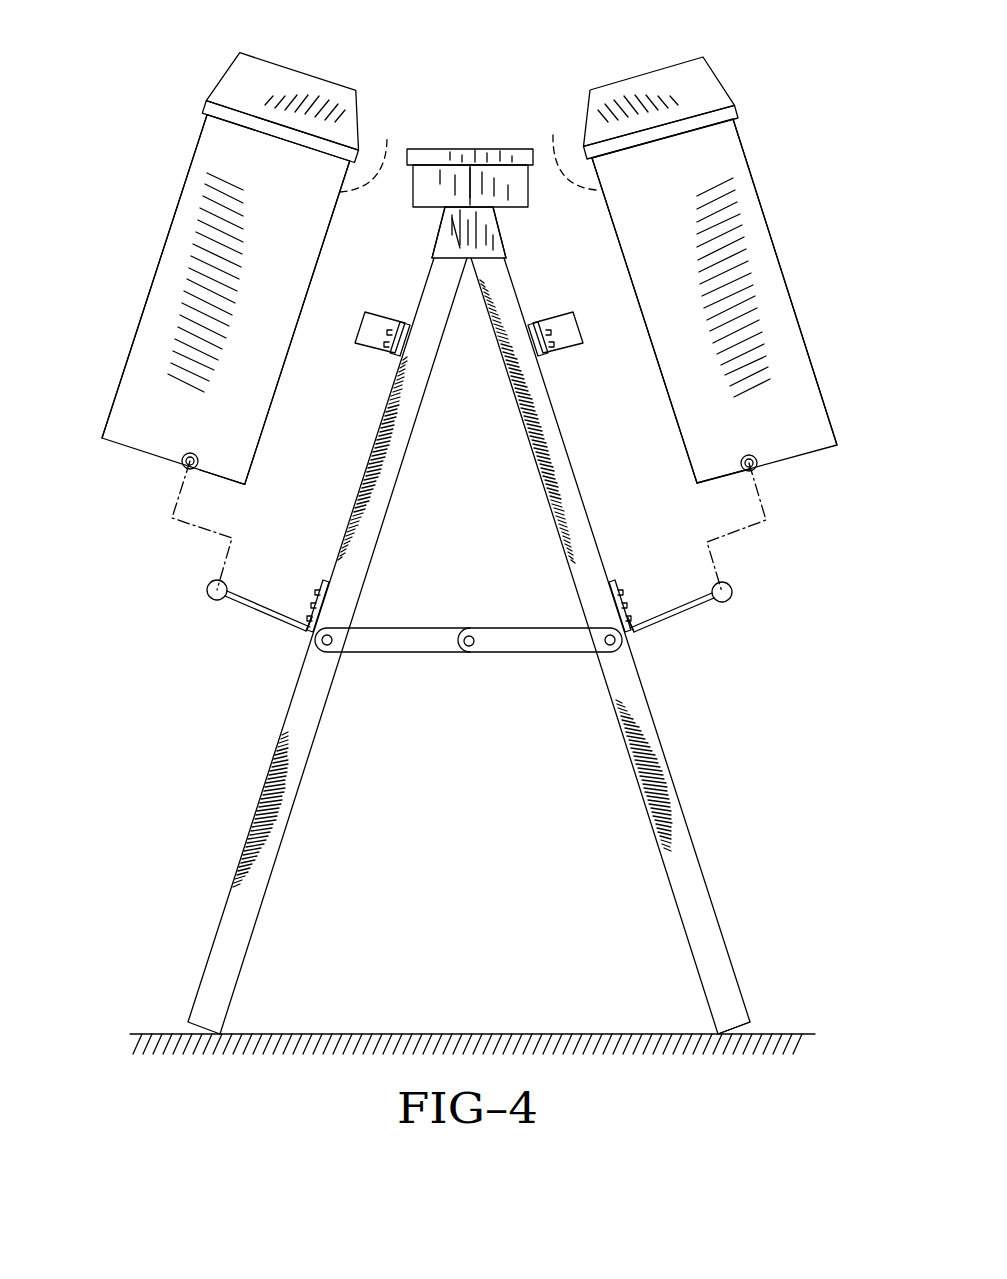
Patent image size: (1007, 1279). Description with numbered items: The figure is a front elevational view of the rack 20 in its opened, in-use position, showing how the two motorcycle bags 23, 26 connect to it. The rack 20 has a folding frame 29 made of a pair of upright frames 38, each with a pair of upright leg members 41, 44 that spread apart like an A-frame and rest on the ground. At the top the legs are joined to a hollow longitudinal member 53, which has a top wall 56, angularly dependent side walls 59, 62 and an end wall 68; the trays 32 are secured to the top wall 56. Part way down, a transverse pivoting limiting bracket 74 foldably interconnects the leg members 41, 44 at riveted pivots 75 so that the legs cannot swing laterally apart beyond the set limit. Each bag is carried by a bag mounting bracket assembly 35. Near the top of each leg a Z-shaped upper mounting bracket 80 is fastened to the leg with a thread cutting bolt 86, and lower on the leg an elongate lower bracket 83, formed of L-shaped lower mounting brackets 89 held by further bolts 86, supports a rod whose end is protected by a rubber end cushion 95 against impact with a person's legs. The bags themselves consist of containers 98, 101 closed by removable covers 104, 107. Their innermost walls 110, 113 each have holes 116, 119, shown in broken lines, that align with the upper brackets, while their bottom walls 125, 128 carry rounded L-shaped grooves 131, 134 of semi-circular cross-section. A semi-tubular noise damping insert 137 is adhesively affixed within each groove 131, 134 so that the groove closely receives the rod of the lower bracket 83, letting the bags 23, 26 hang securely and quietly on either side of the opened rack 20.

The rack 20 is at (527, 74).
The motorcycle bag 23 is at (163, 185).
The motorcycle bag 26 is at (778, 188).
The folding frame 29 is at (715, 818).
The tray 32 is at (434, 150).
The bag mounting bracket assembly 35 is at (172, 550).
The upright frame 38 is at (298, 702).
The upright leg member 41 is at (660, 758).
The upright leg member 44 is at (252, 828).
The hollow longitudinal member 53 is at (436, 250).
The top wall 56 is at (470, 208).
The side wall 59 is at (440, 233).
The side wall 62 is at (500, 238).
The end wall 68 is at (460, 248).
The transverse pivoting limiting bracket 74 is at (480, 656).
The riveted pivot 75 is at (323, 645).
The Z-shaped upper mounting bracket 80 is at (372, 352).
The elongate lower bracket 83 is at (205, 603).
The thread cutting bolt 86 is at (312, 612).
The L-shaped lower mounting bracket 89 is at (255, 618).
The rubber end cushion 95 is at (207, 590).
The container 98 is at (205, 142).
The container 101 is at (746, 142).
The removable cover 104 is at (222, 82).
The removable cover 107 is at (724, 78).
The innermost wall 110 is at (258, 450).
The innermost wall 113 is at (682, 452).
The hole 116 is at (374, 150).
The hole 119 is at (564, 150).
The bottom wall 125 is at (215, 482).
The bottom wall 128 is at (724, 484).
The rounded L-shaped groove 131 is at (192, 455).
The rounded L-shaped groove 134 is at (747, 457).
The semi-tubular noise damping insert 137 is at (182, 466).